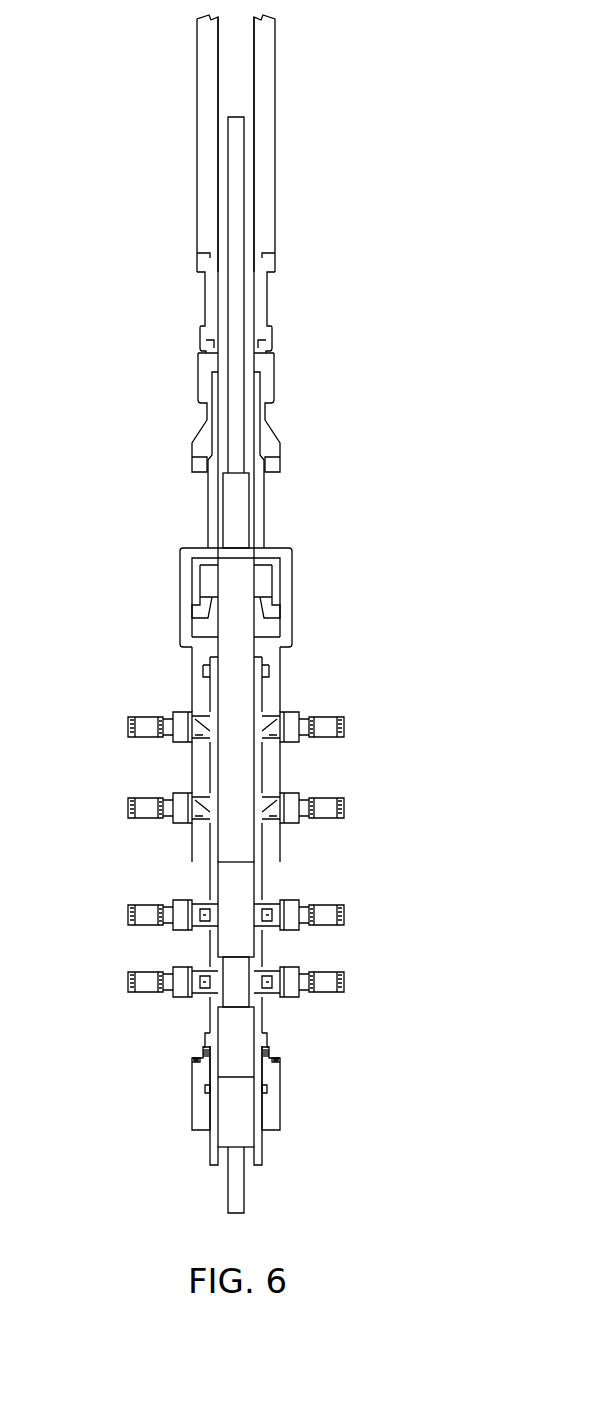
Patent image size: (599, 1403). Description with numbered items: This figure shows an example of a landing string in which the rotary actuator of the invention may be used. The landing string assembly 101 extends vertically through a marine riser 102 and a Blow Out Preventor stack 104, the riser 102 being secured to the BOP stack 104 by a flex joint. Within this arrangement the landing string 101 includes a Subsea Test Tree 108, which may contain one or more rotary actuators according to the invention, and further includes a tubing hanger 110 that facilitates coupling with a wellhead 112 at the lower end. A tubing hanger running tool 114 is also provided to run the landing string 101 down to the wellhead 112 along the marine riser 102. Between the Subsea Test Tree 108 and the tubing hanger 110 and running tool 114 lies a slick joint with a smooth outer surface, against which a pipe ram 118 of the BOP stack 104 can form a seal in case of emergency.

The landing string assembly 101 is at (228, 240).
The marine riser 102 is at (277, 162).
The Blow Out Preventor (BOP) stack 104 is at (280, 457).
The Subsea Test Tree (SSTT) 108 is at (237, 875).
The tubing hanger 110 is at (237, 1133).
The wellhead 112 is at (283, 1100).
The tubing hanger running tool 114 is at (230, 1030).
The pipe ram 118 is at (293, 930).